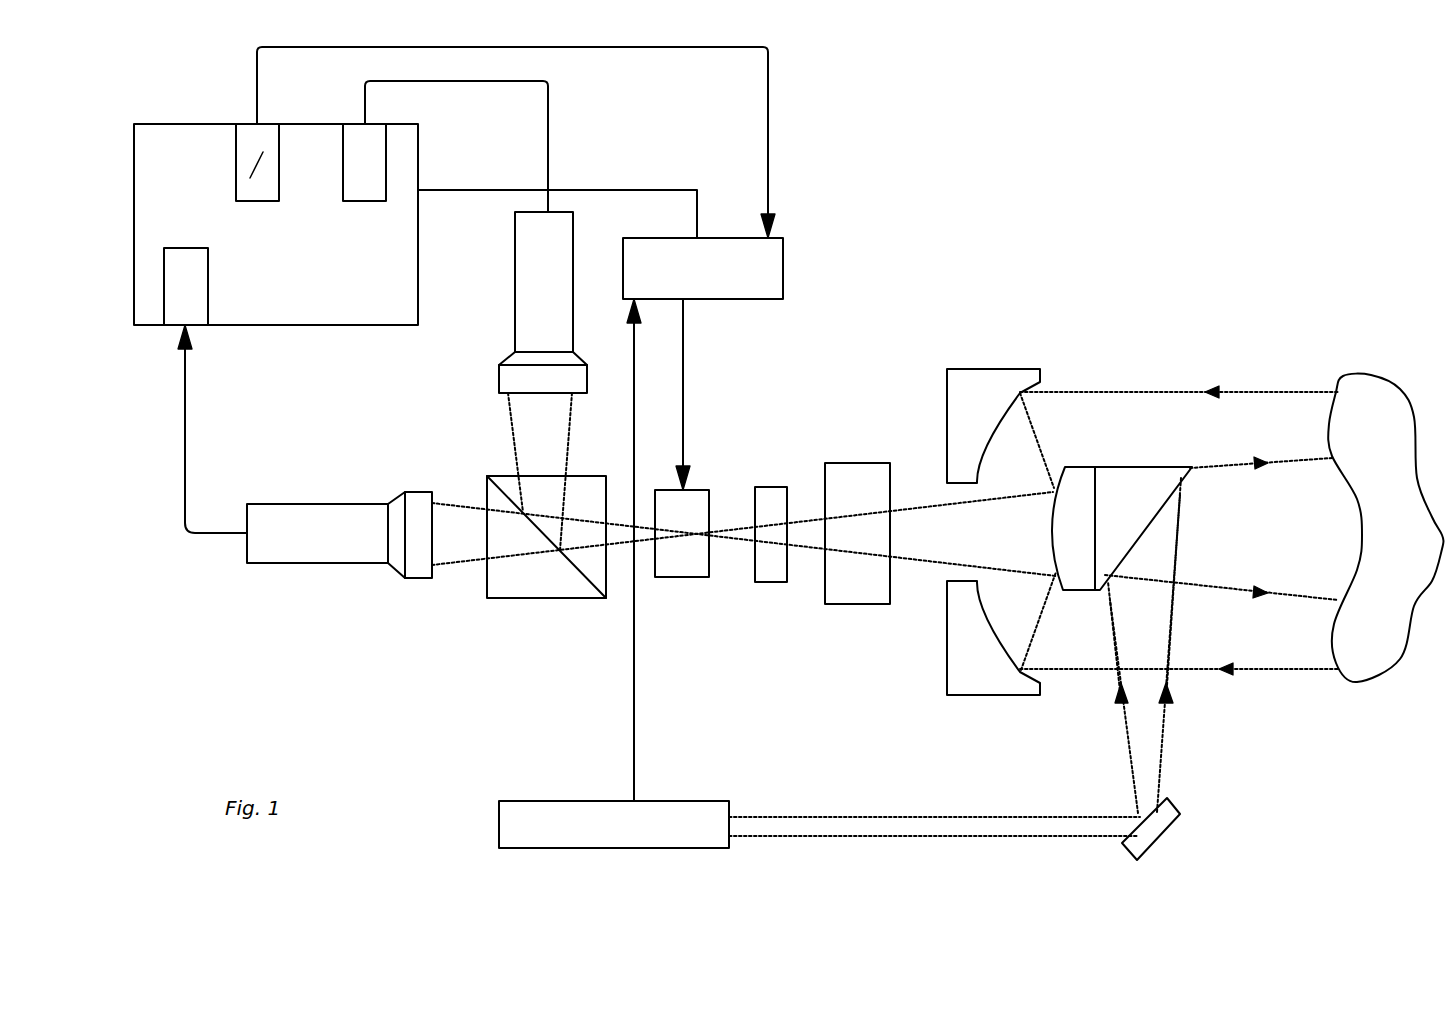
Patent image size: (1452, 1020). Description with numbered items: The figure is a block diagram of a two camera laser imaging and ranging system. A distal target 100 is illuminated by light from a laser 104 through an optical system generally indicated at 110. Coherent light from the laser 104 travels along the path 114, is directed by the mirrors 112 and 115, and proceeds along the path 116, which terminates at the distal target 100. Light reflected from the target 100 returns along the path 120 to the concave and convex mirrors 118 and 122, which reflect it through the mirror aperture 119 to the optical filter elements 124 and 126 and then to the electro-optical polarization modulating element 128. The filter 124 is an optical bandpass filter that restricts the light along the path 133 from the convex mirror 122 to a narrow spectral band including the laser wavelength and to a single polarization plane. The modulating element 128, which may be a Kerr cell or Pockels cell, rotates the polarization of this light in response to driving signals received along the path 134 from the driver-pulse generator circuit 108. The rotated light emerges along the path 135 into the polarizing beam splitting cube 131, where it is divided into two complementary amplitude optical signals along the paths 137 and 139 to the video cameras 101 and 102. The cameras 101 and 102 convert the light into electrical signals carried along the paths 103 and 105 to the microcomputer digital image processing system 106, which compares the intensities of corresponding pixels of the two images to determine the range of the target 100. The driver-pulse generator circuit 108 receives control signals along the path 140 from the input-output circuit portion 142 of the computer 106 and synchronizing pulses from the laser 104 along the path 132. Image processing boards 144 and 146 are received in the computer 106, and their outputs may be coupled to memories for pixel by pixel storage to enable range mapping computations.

The distal target 100 is at (1343, 375).
The video camera 101 is at (515, 248).
The video camera 102 is at (270, 504).
The signal path 103 is at (186, 428).
The laser 104 is at (574, 848).
The signal path 105 is at (547, 122).
The digital image processing system 106 is at (377, 325).
The driver-pulse generator circuit 108 is at (783, 270).
The optical system 110 is at (1175, 293).
The mirror 112 is at (1124, 467).
The laser light path 114 is at (1172, 609).
The mirror 115 is at (1160, 837).
The illumination path 116 is at (1215, 472).
The concave mirror 118 is at (995, 369).
The mirror aperture 119 is at (962, 498).
The return light path 120 is at (1129, 392).
The convex mirror 122 is at (1062, 590).
The optical bandpass filter 124 is at (863, 463).
The optical filter element 126 is at (780, 487).
The electro-optical polarization modulating element 128 is at (680, 577).
The polarizing beam splitting cube 131 is at (503, 598).
The synchronizing pulse path 132 is at (634, 653).
The returning light path 133 is at (897, 555).
The driving signal path 134 is at (712, 410).
The modulated light path 135 is at (622, 546).
The optical signal path 137 is at (457, 503).
The optical signal path 139 is at (568, 450).
The control signal path 140 is at (768, 113).
The input-output circuit portion 142 is at (247, 124).
The image processing board 144 is at (362, 124).
The image processing board 146 is at (164, 266).